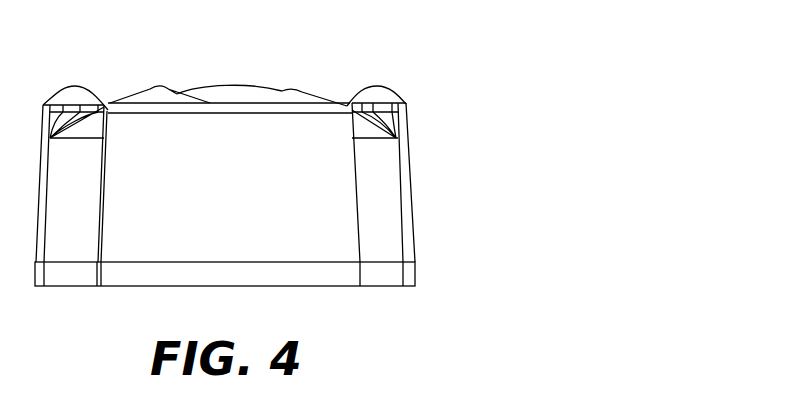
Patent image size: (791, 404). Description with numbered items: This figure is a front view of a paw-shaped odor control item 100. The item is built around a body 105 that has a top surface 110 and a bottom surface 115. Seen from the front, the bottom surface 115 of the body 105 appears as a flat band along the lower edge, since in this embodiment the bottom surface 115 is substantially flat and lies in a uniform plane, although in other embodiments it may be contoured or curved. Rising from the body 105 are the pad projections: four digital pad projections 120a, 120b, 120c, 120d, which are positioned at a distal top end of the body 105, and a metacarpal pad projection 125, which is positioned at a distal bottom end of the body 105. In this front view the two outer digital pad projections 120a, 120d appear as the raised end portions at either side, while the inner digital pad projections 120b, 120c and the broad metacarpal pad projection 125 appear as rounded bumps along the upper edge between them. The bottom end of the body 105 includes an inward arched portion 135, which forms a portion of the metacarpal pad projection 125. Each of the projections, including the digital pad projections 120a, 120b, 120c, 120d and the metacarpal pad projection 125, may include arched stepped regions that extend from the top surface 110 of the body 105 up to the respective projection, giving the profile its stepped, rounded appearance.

The paw-shaped odor control item 100 is at (423, 295).
The body 105 is at (409, 158).
The top surface 110 is at (349, 89).
The bottom surface 115 is at (304, 294).
The digital pad projection 120a is at (75, 86).
The digital pad projection 120b is at (158, 86).
The digital pad projection 120c is at (296, 88).
The digital pad projection 120d is at (377, 86).
The metacarpal pad projection 125 is at (228, 85).
The inward arched portion 135 is at (238, 190).